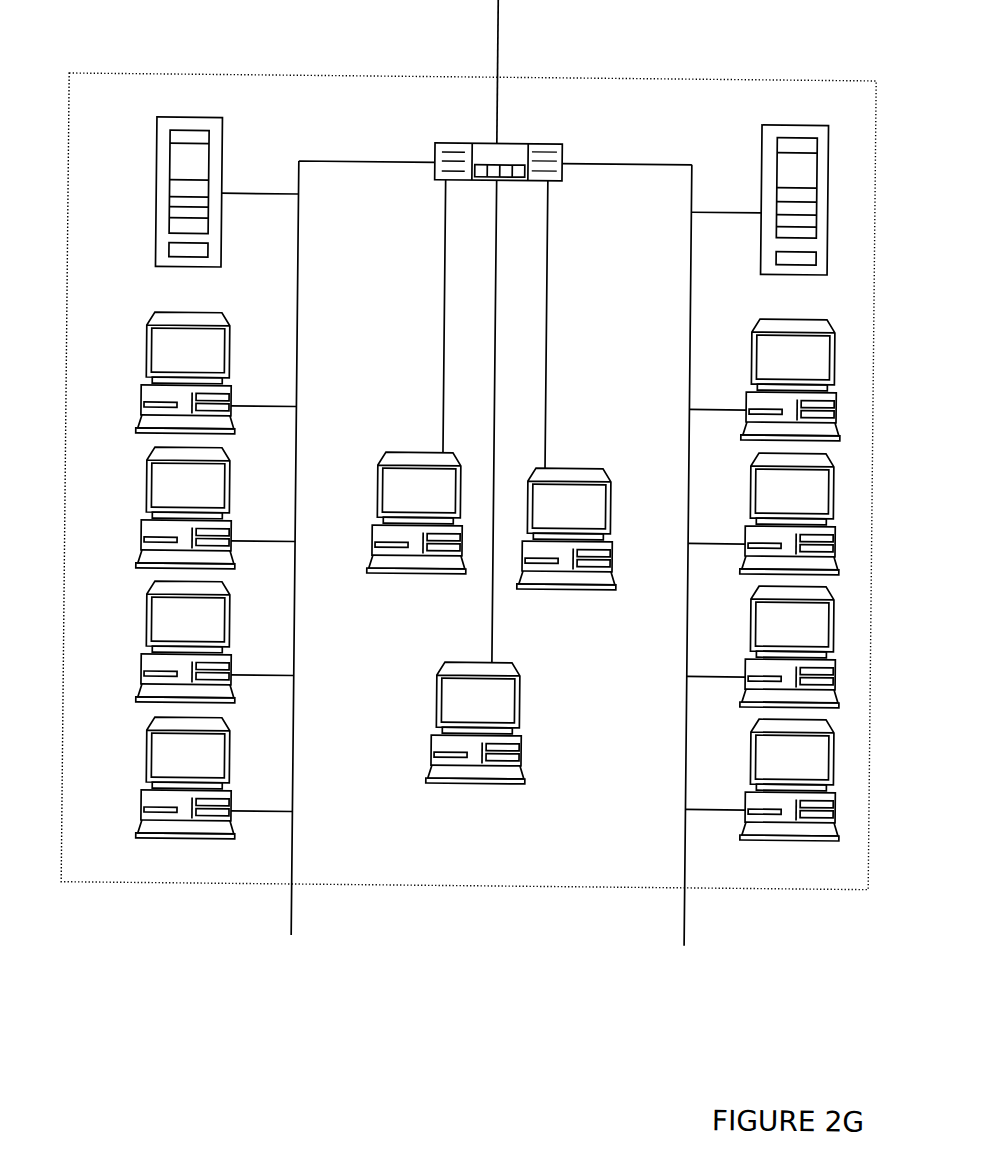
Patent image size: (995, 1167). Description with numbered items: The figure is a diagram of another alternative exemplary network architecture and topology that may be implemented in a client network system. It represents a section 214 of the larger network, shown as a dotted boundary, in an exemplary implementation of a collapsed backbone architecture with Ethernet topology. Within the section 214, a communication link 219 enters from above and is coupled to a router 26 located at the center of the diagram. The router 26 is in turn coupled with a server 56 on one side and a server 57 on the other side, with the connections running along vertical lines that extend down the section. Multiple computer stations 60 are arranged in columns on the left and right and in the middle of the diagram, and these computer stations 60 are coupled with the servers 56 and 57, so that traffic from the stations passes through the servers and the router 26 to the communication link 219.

The section 214 is at (249, 75).
The communication link 219 is at (493, 0).
The router 26 is at (499, 162).
The server 56 is at (227, 192).
The server 57 is at (760, 199).
The computer stations 60 is at (488, 578).